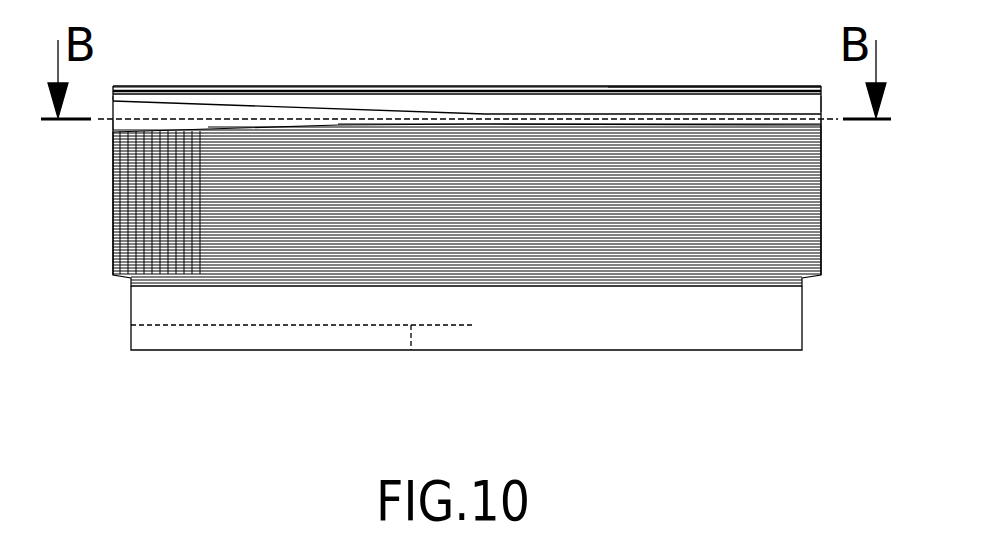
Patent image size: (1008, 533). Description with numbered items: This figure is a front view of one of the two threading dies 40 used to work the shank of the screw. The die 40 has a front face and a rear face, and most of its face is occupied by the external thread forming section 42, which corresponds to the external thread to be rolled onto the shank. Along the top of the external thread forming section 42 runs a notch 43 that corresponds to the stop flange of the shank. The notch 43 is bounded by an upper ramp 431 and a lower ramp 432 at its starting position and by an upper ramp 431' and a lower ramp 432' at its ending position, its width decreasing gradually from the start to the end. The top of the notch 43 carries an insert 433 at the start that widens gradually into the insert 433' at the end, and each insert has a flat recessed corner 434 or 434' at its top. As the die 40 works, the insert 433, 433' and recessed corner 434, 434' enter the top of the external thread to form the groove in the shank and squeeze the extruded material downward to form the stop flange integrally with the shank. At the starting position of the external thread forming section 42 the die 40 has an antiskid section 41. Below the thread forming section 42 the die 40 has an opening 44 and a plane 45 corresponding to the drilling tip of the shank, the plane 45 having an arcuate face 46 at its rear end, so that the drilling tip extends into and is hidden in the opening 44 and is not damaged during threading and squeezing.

The threading die 40 is at (463, 78).
The antiskid section 41 is at (105, 240).
The external thread forming section 42 is at (603, 248).
The notch 43 is at (323, 78).
The upper ramp 431 is at (299, 68).
The upper ramp 431' is at (653, 68).
The lower ramp 432 is at (98, 143).
The lower ramp 432' is at (851, 151).
The insert 433 is at (209, 61).
The insert 433' is at (776, 67).
The recessed corner 434 is at (467, 55).
The recessed corner 434' is at (714, 54).
The opening 44 is at (140, 298).
The plane 45 is at (263, 330).
The arcuate face 46 is at (437, 332).